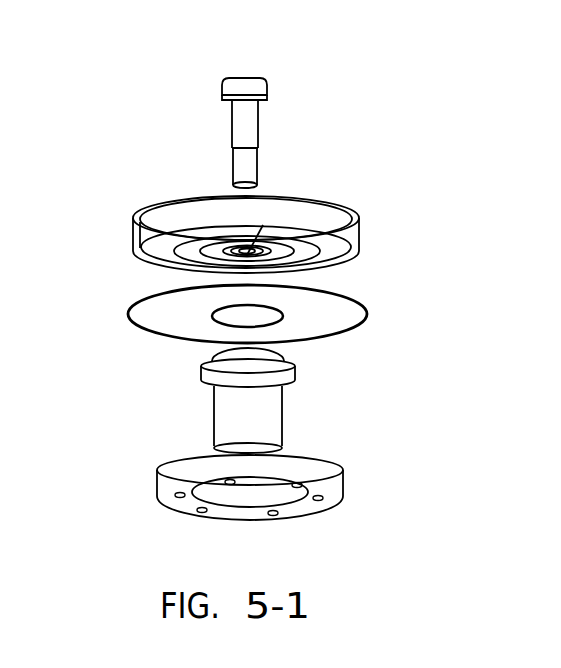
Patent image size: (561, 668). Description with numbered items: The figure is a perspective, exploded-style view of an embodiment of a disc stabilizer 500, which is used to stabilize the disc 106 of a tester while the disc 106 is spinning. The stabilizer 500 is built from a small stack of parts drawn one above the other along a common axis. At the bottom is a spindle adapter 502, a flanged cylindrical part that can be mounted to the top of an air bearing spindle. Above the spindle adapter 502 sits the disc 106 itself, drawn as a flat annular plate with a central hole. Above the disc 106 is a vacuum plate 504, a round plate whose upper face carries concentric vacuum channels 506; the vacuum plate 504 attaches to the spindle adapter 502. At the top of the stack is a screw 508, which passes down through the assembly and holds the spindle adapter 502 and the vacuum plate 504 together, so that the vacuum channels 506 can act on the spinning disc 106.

The disc stabilizer 500 is at (284, 70).
The screw 508 is at (262, 122).
The vacuum plate 504 is at (350, 206).
The vacuum channels 506 is at (173, 255).
The disc 106 is at (363, 308).
The spindle adapter 502 is at (287, 415).